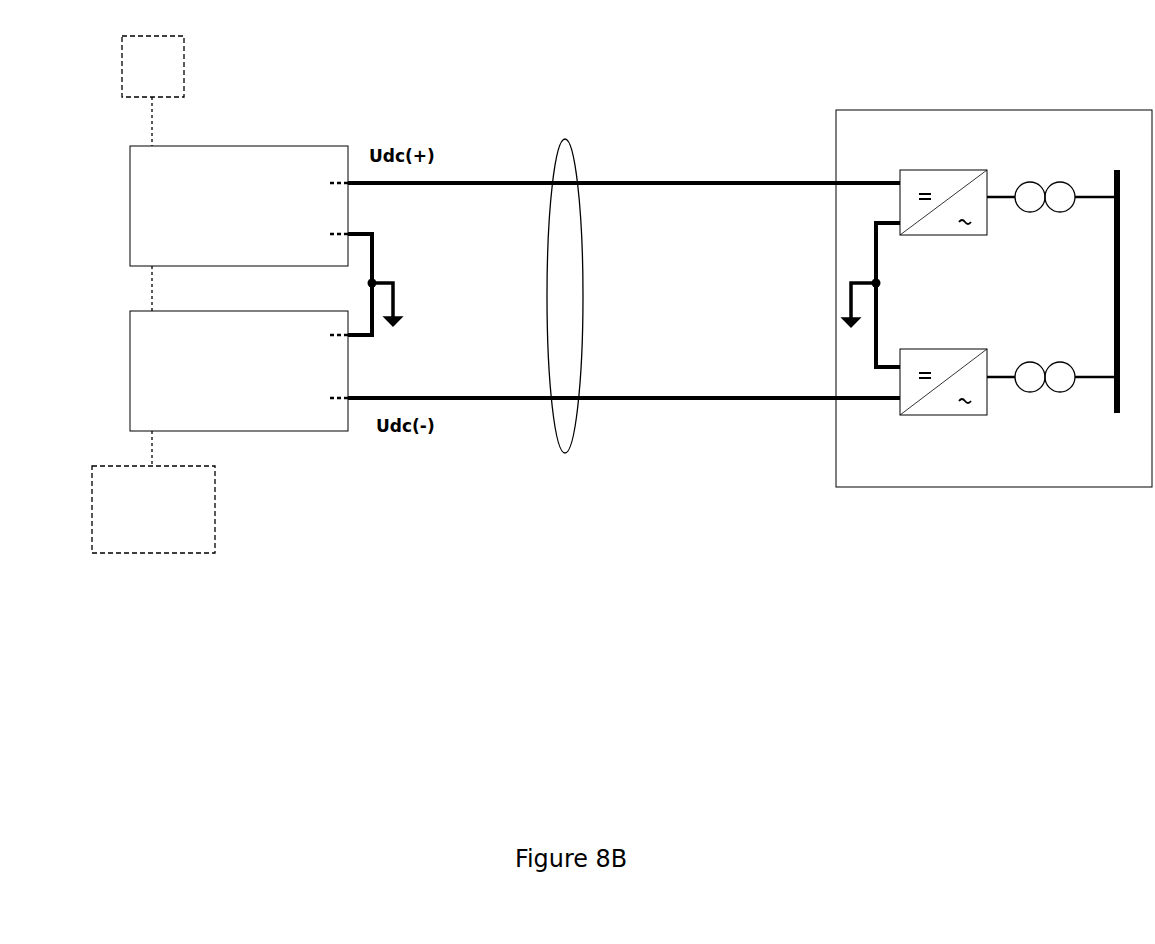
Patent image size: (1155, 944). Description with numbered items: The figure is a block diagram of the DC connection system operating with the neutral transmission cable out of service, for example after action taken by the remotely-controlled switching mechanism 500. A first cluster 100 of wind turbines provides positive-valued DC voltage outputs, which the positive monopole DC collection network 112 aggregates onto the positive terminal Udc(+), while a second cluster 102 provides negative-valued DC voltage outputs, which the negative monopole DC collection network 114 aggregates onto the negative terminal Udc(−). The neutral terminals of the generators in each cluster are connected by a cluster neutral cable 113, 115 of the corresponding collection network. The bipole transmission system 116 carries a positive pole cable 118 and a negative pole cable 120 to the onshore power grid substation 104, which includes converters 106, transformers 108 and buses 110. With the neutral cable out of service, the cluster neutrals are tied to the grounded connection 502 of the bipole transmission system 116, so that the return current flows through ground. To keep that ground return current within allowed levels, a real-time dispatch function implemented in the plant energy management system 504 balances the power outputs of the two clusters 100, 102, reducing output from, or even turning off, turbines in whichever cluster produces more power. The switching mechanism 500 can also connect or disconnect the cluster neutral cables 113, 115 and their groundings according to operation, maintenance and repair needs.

The first cluster of renewable power generators 100 is at (239, 206).
The second cluster of renewable power generators 102 is at (239, 371).
The power grid substation 104 is at (994, 298).
The converters 106 is at (953, 168).
The transformers 108 is at (1038, 172).
The buses 110 is at (1120, 165).
The positive monopole DC collection network 112 is at (335, 164).
The neutral cable of the positive monopole DC collection network 113 is at (335, 214).
The negative monopole DC collection network 114 is at (336, 412).
The neutral cable of the negative monopole DC collection network 115 is at (336, 351).
The bipole transmission system 116 is at (565, 453).
The positive pole cable 118 is at (771, 180).
The negative pole cable 120 is at (775, 402).
The remotely-controlled switching mechanism 500 is at (153, 509).
The grounded connection 502 is at (397, 295).
The energy management system 504 is at (153, 66).